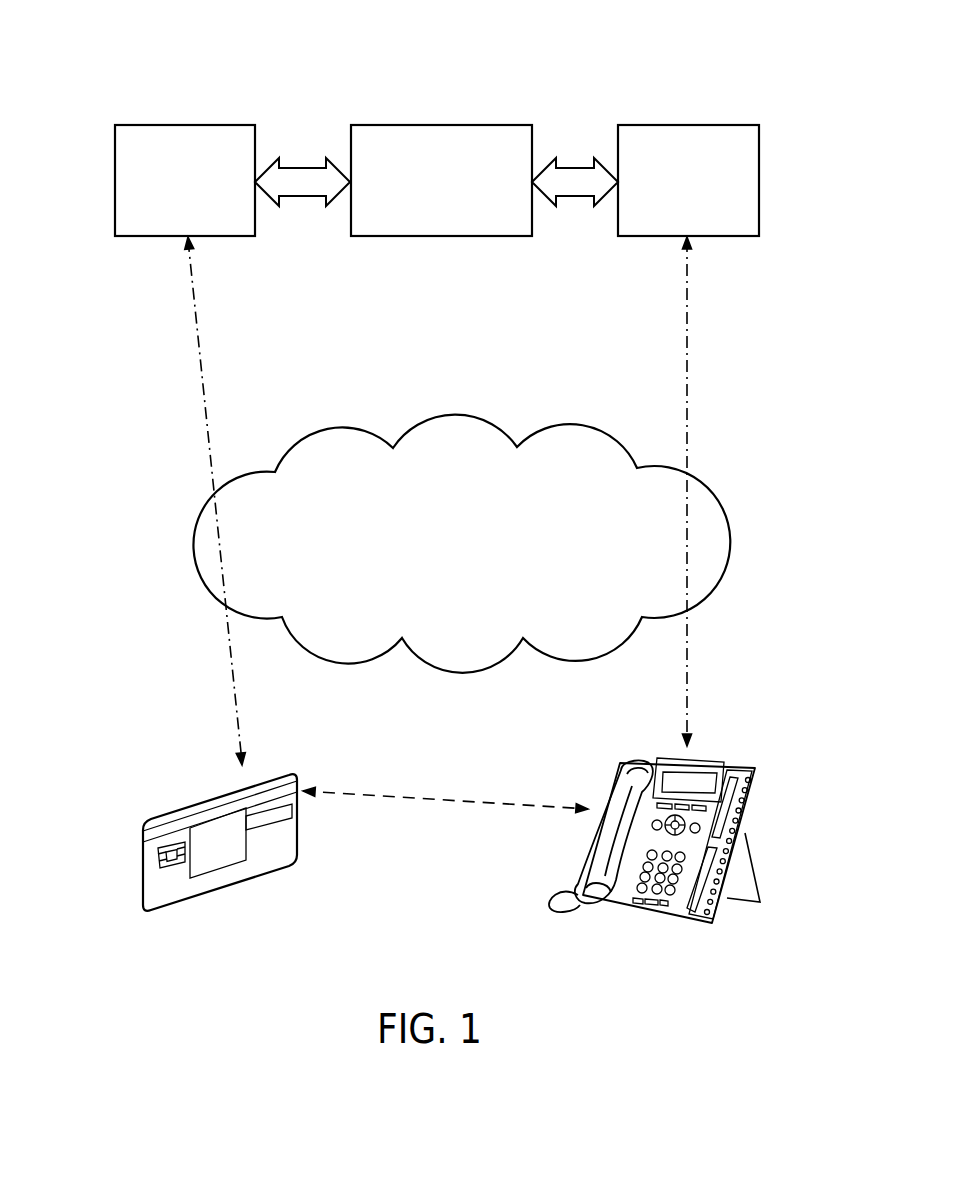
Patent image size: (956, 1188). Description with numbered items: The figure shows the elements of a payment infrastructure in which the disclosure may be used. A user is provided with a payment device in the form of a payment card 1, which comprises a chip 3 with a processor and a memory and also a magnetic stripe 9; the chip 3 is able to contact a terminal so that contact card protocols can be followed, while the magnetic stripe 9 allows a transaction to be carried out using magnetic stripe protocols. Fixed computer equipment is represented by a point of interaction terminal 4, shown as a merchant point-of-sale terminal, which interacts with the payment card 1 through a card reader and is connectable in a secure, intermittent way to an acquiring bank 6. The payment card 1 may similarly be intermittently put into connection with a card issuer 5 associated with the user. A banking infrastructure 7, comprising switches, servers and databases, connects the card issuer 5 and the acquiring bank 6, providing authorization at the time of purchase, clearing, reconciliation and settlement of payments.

The payment card 1 is at (165, 809).
The chip 3 is at (170, 841).
The magnetic stripe 9 is at (210, 801).
The terminal 4 is at (761, 828).
The card issuer 5 is at (182, 123).
The acquiring bank 6 is at (698, 123).
The banking infrastructure 7 is at (440, 123).